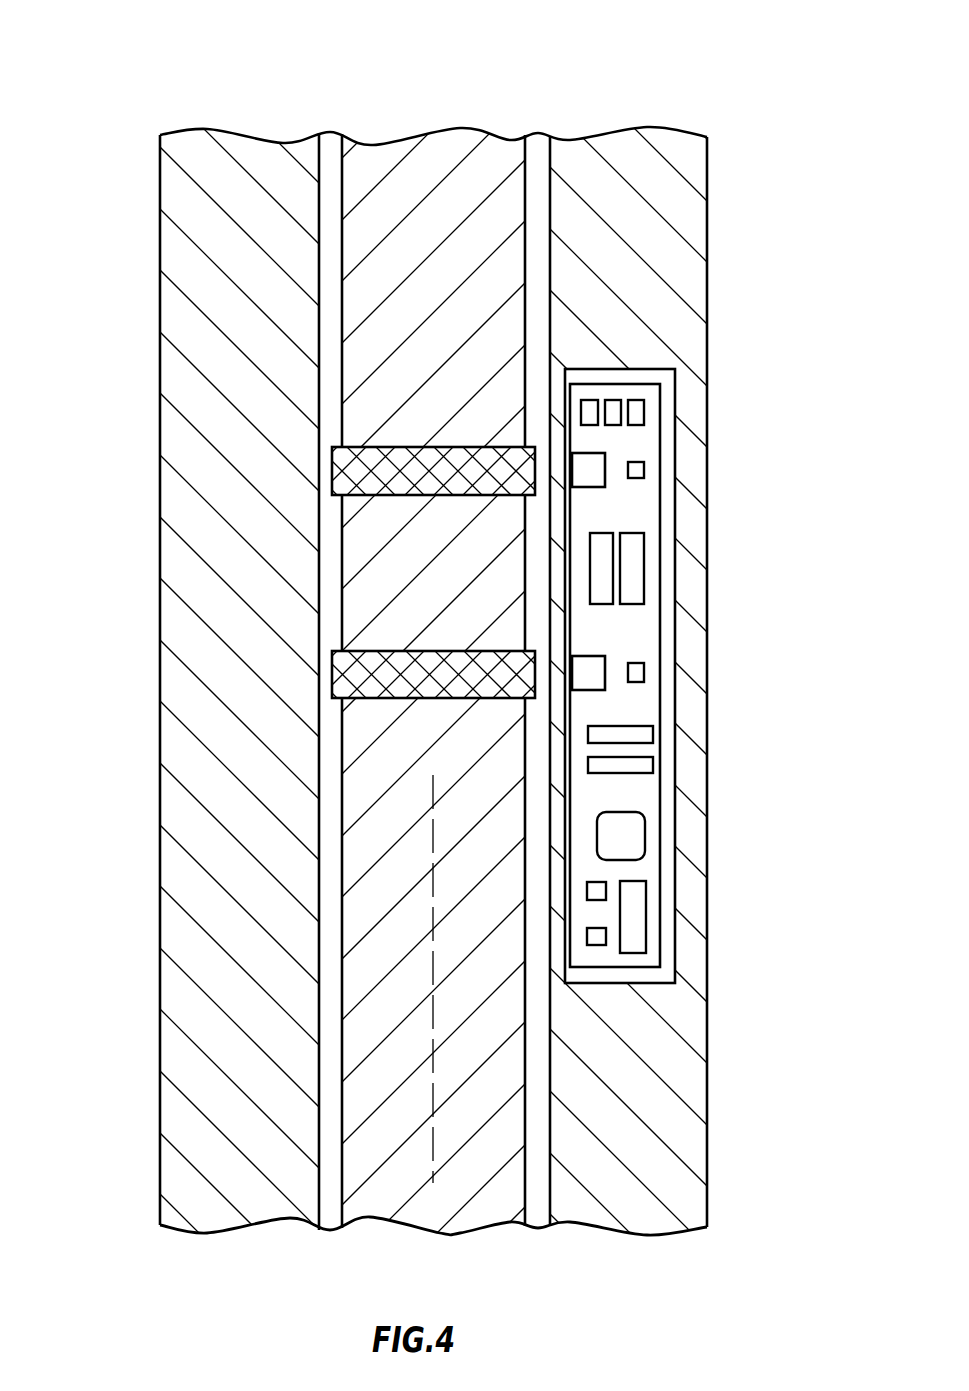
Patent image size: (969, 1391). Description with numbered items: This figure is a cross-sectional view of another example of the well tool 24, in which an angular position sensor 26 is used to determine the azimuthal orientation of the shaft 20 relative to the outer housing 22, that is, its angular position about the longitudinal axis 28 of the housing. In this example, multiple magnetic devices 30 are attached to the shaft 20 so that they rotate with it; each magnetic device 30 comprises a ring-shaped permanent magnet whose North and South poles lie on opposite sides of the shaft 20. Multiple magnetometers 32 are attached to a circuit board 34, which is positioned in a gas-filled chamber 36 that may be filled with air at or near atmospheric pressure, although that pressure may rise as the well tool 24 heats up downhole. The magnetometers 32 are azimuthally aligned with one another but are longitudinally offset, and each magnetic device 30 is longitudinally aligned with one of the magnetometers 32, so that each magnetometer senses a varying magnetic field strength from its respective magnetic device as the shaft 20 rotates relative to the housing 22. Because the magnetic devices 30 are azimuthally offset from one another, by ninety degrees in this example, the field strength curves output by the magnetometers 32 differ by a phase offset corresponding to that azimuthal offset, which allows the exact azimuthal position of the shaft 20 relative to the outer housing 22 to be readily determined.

The shaft 20 is at (342, 930).
The outer housing 22 is at (160, 235).
The well tool 24 is at (742, 80).
The angular position sensor 26 is at (688, 676).
The longitudinal axis 28 is at (433, 1147).
The magnetic device 30 is at (332, 462).
The magnetometer 32 is at (593, 452).
The circuit board 34 is at (662, 816).
The gas-filled chamber 36 is at (662, 973).